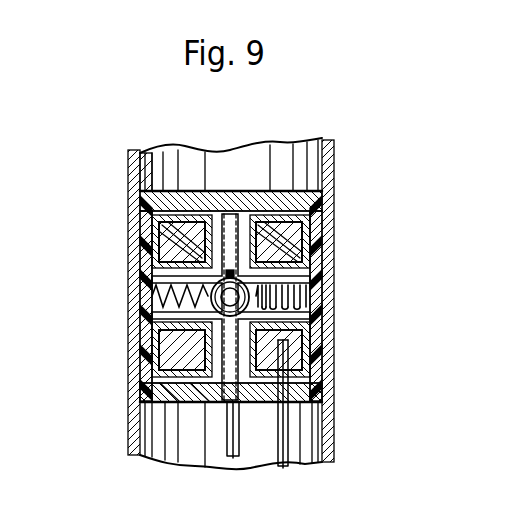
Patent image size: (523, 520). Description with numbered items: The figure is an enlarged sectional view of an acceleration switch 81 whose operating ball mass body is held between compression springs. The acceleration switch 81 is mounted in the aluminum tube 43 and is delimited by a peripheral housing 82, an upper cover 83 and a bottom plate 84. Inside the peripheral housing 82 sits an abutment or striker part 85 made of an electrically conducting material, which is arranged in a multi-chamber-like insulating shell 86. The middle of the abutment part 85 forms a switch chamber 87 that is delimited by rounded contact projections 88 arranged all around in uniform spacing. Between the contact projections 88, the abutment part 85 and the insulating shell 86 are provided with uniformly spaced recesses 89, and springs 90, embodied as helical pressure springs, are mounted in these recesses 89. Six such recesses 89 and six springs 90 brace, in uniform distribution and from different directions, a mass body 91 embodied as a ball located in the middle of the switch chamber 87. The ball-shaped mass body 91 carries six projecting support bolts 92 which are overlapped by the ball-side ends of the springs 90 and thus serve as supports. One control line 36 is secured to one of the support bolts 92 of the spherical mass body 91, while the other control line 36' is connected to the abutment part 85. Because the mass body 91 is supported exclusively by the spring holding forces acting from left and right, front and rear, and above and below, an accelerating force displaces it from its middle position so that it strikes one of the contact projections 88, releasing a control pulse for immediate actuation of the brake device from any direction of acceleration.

The acceleration switch 81 is at (369, 154).
The aluminum tube 43 is at (133, 167).
The upper cover 83 is at (172, 202).
The peripheral housing 82 is at (140, 205).
The contact projections 88 is at (140, 276).
The abutment part 85 is at (140, 236).
The insulating shell 86 is at (140, 257).
The bottom plate 84 is at (134, 421).
The switch chamber 87 is at (292, 338).
The recesses 89 is at (236, 280).
The springs 90 is at (218, 215).
The support bolts 92 is at (256, 232).
The mass body 91 is at (193, 403).
The control line 36 is at (205, 452).
The control line 36' is at (306, 426).